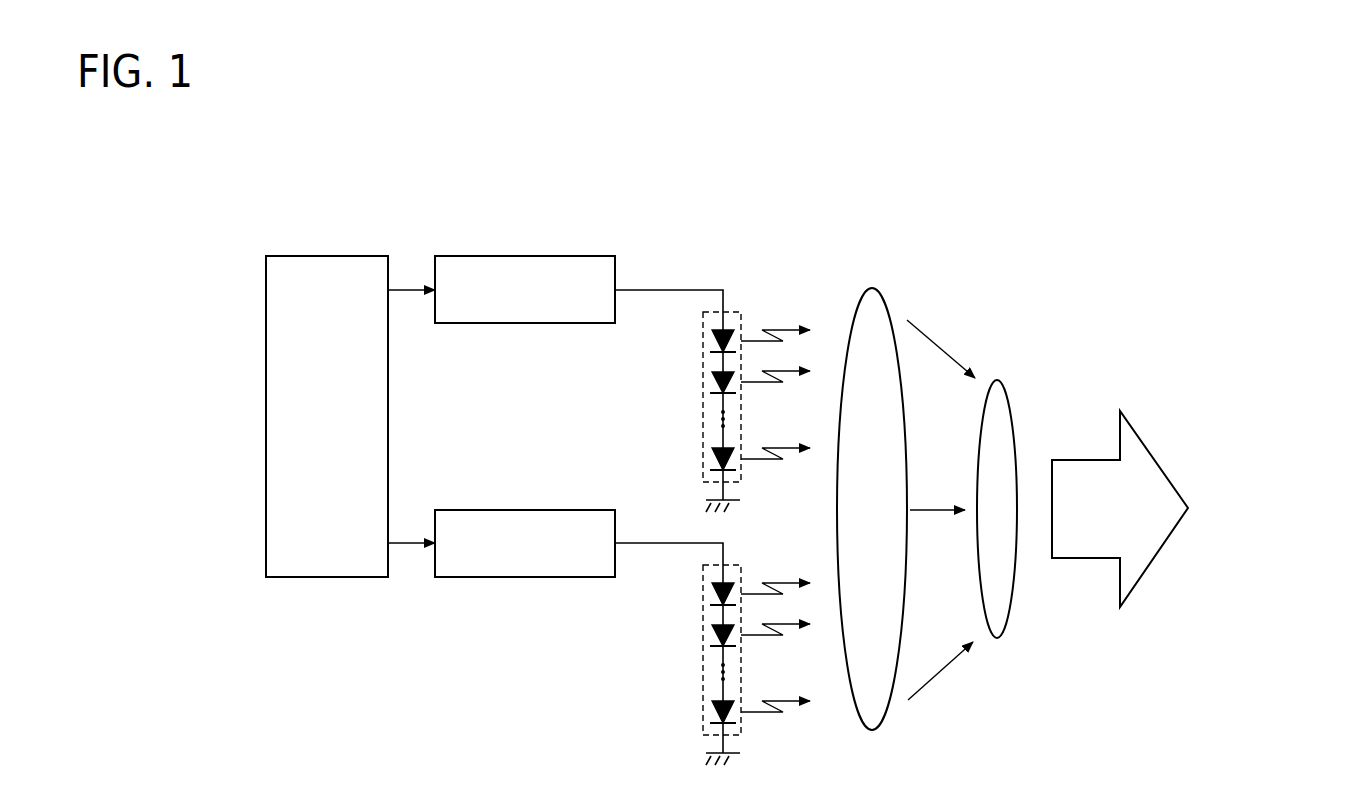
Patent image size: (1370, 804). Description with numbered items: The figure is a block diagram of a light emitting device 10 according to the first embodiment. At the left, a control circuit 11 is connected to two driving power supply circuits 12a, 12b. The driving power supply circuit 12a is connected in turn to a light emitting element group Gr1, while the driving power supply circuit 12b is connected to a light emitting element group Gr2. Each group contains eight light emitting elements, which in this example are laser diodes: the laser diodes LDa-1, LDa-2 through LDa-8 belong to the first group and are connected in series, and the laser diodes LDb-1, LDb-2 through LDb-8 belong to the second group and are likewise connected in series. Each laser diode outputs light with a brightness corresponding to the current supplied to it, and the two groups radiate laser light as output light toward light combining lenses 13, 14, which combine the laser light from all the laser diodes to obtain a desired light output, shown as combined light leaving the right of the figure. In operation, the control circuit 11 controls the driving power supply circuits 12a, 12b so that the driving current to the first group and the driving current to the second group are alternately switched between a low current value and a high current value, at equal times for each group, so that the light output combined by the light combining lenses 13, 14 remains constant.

The light emitting device 10 is at (913, 191).
The control circuit 11 is at (347, 256).
The driving power supply circuit 12a is at (565, 256).
The driving power supply circuit 12b is at (565, 510).
The light combining lens 13 is at (877, 290).
The light combining lens 14 is at (997, 379).
The light emitting element group Gr1 is at (712, 394).
The light emitting element group Gr2 is at (712, 647).
The laser diode LDa-1 is at (713, 331).
The laser diode LDa-2 is at (713, 372).
The laser diode LDa-8 is at (713, 448).
The laser diode LDb-1 is at (713, 584).
The laser diode LDb-2 is at (713, 625).
The laser diode LDb-8 is at (713, 701).